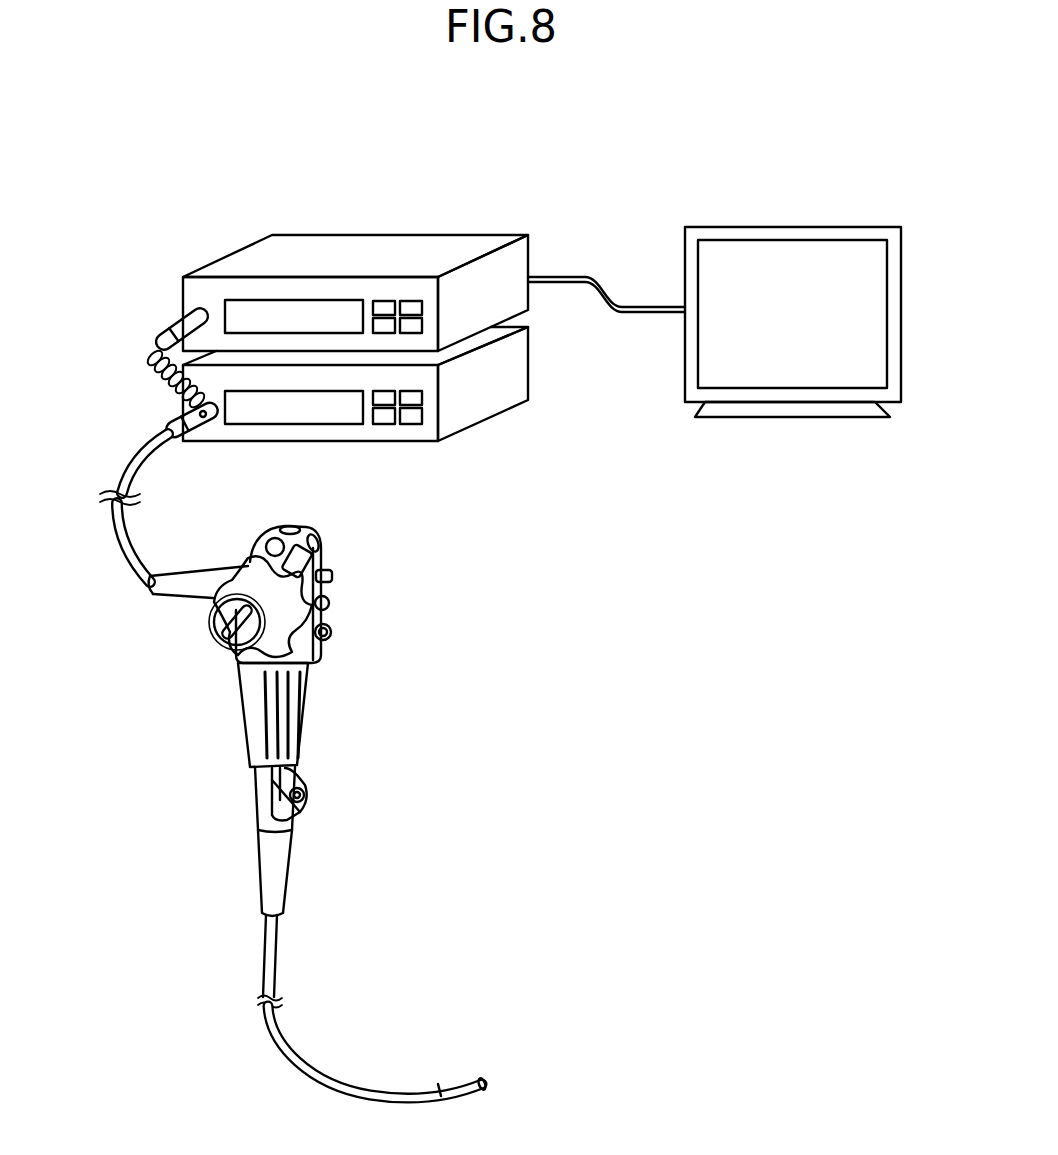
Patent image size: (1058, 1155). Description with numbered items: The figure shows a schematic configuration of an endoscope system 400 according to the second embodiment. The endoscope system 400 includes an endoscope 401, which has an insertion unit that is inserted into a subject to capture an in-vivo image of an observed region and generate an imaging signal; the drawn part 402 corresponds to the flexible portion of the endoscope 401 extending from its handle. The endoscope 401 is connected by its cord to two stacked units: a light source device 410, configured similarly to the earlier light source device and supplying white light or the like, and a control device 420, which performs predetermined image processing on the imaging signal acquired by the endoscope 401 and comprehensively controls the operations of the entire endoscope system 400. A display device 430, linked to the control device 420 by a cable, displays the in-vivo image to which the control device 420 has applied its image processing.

The endoscope system 400 is at (838, 146).
The endoscope 401 is at (360, 541).
The insertion portion 402 is at (341, 1058).
The light source device 410 is at (517, 364).
The control device 420 is at (495, 243).
The display device 430 is at (793, 232).